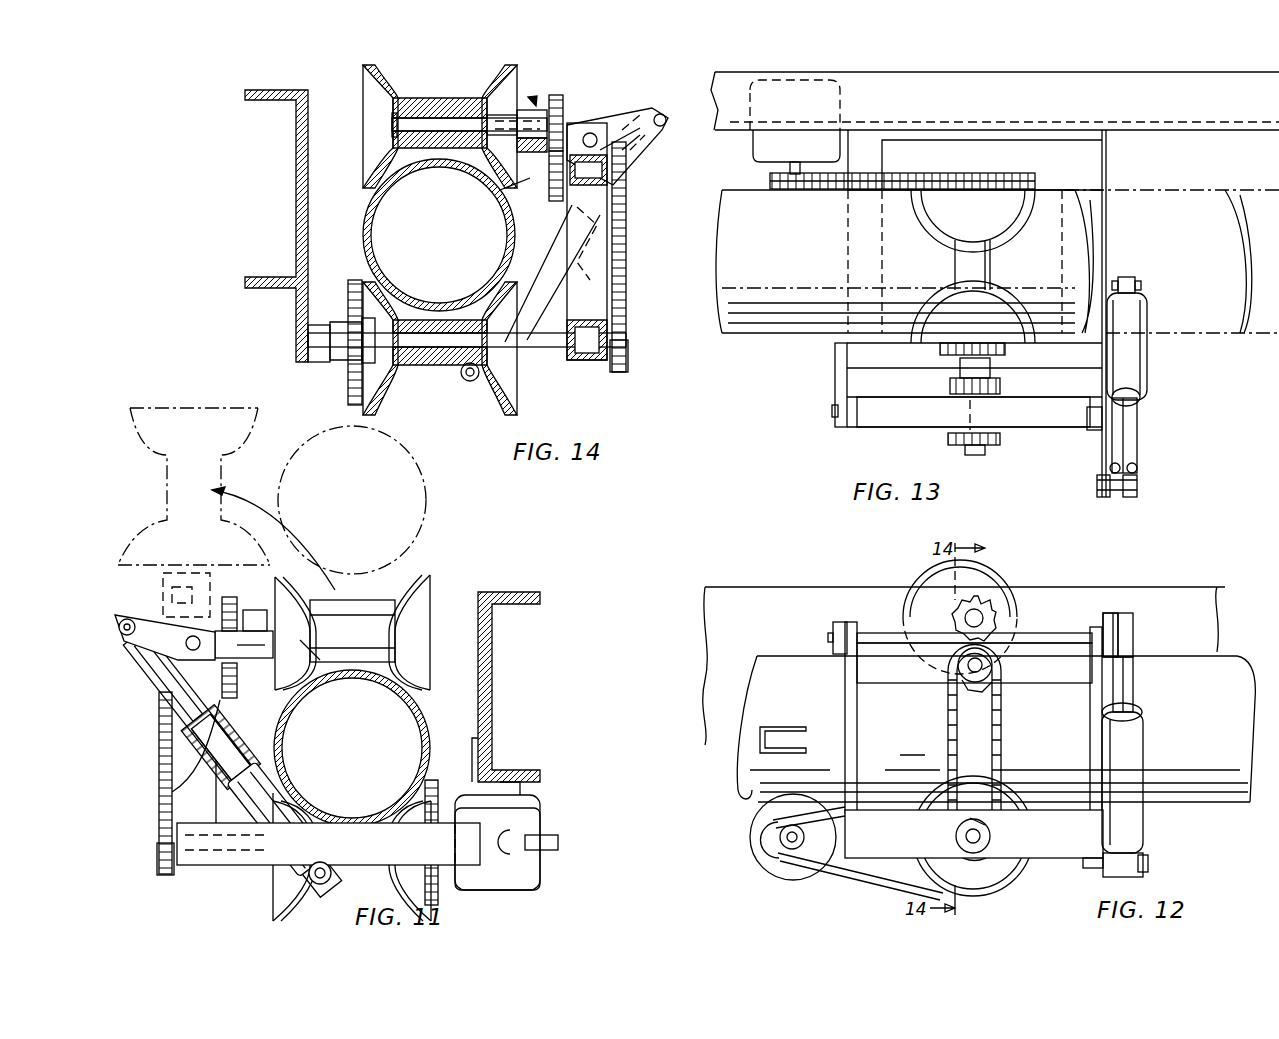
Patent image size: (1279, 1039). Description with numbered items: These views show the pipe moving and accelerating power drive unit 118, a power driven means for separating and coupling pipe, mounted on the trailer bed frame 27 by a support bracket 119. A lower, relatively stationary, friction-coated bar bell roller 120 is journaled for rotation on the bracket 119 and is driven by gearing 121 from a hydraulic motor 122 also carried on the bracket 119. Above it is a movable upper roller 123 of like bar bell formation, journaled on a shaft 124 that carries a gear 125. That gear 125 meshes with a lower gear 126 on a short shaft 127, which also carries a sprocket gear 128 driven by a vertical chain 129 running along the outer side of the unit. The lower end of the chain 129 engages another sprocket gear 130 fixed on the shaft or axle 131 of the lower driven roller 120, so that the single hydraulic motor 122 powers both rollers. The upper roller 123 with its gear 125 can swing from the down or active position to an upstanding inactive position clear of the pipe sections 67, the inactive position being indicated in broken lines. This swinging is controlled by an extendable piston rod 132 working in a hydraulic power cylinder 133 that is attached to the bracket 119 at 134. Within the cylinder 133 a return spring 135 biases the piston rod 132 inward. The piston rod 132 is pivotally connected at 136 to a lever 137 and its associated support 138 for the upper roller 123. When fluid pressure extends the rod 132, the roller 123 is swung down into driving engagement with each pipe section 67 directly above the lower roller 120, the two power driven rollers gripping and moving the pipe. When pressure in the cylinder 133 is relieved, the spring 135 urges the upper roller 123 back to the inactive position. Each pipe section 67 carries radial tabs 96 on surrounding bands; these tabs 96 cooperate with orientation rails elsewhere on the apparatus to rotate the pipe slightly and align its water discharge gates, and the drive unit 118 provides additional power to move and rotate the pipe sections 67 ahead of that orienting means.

In FIG. 14, the bed frame 27 is at (296, 206).
In FIG. 13, the bed frame 27 is at (1135, 104).
In FIG. 12, the bed frame 27 is at (1218, 612).
In FIG. 11, the bed frame 27 is at (492, 645).
In FIG. 14, the pipe section 67 is at (364, 216).
In FIG. 13, the pipe section 67 is at (805, 266).
In FIG. 12, the pipe section 67 is at (1228, 756).
In FIG. 11, the pipe section 67 is at (278, 492).
In FIG. 12, the radial tab 96 is at (752, 732).
In FIG. 14, the power drive unit 118 is at (535, 102).
In FIG. 13, the power drive unit 118 is at (830, 384).
In FIG. 12, the power drive unit 118 is at (1060, 636).
In FIG. 11, the power drive unit 118 is at (135, 648).
In FIG. 14, the support bracket 119 is at (600, 362).
In FIG. 13, the support bracket 119 is at (1098, 160).
In FIG. 12, the support bracket 119 is at (905, 844).
In FIG. 11, the support bracket 119 is at (372, 850).
In FIG. 14, the lower roller 120 is at (505, 392).
In FIG. 12, the lower roller 120 is at (1010, 875).
In FIG. 11, the lower roller 120 is at (278, 880).
In FIG. 14, the gearing 121 is at (348, 372).
In FIG. 13, the gearing 121 is at (930, 172).
In FIG. 12, the gearing 121 is at (870, 878).
In FIG. 11, the gearing 121 is at (430, 782).
In FIG. 13, the hydraulic motor 122 is at (758, 138).
In FIG. 12, the hydraulic motor 122 is at (758, 830).
In FIG. 11, the hydraulic motor 122 is at (520, 800).
In FIG. 14, the upper roller 123 is at (508, 80).
In FIG. 13, the upper roller 123 is at (950, 208).
In FIG. 12, the upper roller 123 is at (1005, 590).
In FIG. 11, the upper roller 123 is at (150, 440).
In FIG. 14, the shaft 124 is at (432, 118).
In FIG. 14, the gear 125 is at (557, 96).
In FIG. 13, the gear 125 is at (950, 385).
In FIG. 12, the gear 125 is at (955, 618).
In FIG. 11, the gear 125 is at (228, 598).
In FIG. 14, the lower gear 126 is at (553, 190).
In FIG. 11, the lower gear 126 is at (233, 700).
In FIG. 14, the short shaft 127 is at (610, 172).
In FIG. 13, the short shaft 127 is at (975, 410).
In FIG. 12, the short shaft 127 is at (982, 665).
In FIG. 14, the sprocket gear 128 is at (638, 120).
In FIG. 13, the sprocket gear 128 is at (1000, 445).
In FIG. 12, the sprocket gear 128 is at (994, 694).
In FIG. 14, the chain 129 is at (628, 240).
In FIG. 13, the chain 129 is at (950, 440).
In FIG. 12, the chain 129 is at (1001, 728).
In FIG. 11, the chain 129 is at (159, 755).
In FIG. 14, the sprocket gear 130 is at (628, 352).
In FIG. 12, the sprocket gear 130 is at (990, 815).
In FIG. 11, the sprocket gear 130 is at (159, 848).
In FIG. 14, the axle 131 is at (540, 348).
In FIG. 12, the axle 131 is at (982, 838).
In FIG. 11, the axle 131 is at (240, 850).
In FIG. 14, the piston rod 132 is at (648, 140).
In FIG. 13, the piston rod 132 is at (1140, 440).
In FIG. 12, the piston rod 132 is at (1133, 672).
In FIG. 11, the piston rod 132 is at (155, 680).
In FIG. 14, the hydraulic power cylinder 133 is at (560, 287).
In FIG. 13, the hydraulic power cylinder 133 is at (1148, 330).
In FIG. 12, the hydraulic power cylinder 133 is at (1142, 740).
In FIG. 11, the hydraulic power cylinder 133 is at (290, 795).
In FIG. 14, the attachment point 134 is at (465, 380).
In FIG. 13, the attachment point 134 is at (1135, 282).
In FIG. 12, the attachment point 134 is at (1148, 866).
In FIG. 11, the attachment point 134 is at (327, 877).
In FIG. 11, the return spring 135 is at (159, 810).
In FIG. 14, the pivotal connection 136 is at (668, 115).
In FIG. 13, the pivotal connection 136 is at (1138, 488).
In FIG. 12, the pivotal connection 136 is at (1135, 622).
In FIG. 11, the pivotal connection 136 is at (119, 626).
In FIG. 14, the lever 137 is at (632, 105).
In FIG. 13, the lever 137 is at (1098, 470).
In FIG. 12, the lever 137 is at (1110, 612).
In FIG. 11, the lever 137 is at (160, 628).
In FIG. 14, the support 138 is at (500, 190).
In FIG. 13, the support 138 is at (878, 430).
In FIG. 11, the support 138 is at (310, 670).